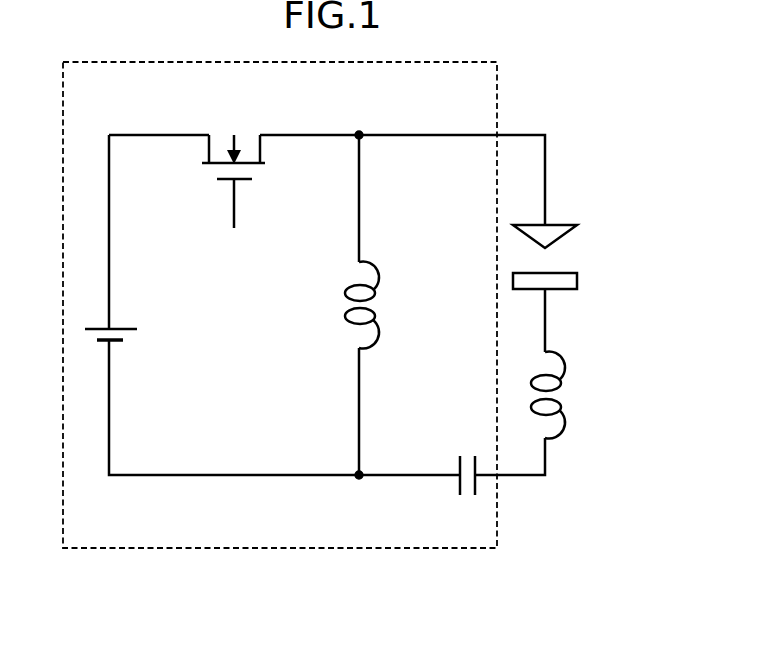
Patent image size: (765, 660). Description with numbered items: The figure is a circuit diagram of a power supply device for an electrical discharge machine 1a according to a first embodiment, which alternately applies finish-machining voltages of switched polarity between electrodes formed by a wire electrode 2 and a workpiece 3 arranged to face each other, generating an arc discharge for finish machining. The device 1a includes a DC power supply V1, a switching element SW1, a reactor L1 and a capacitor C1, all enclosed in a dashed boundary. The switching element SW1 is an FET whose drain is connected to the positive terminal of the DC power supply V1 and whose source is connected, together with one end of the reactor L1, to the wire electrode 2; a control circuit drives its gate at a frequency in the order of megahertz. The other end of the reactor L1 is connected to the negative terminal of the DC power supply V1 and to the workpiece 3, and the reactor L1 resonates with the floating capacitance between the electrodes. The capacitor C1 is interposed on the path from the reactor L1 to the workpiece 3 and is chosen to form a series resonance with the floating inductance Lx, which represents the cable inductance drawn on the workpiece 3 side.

The power supply device for an electrical discharge machine 1a is at (233, 548).
The switching element SW1 is at (244, 135).
The DC power supply V1 is at (124, 329).
The reactor L1 is at (345, 291).
The capacitor C1 is at (458, 485).
The wire electrode 2 is at (558, 225).
The workpiece 3 is at (578, 281).
The floating inductance Lx is at (565, 393).